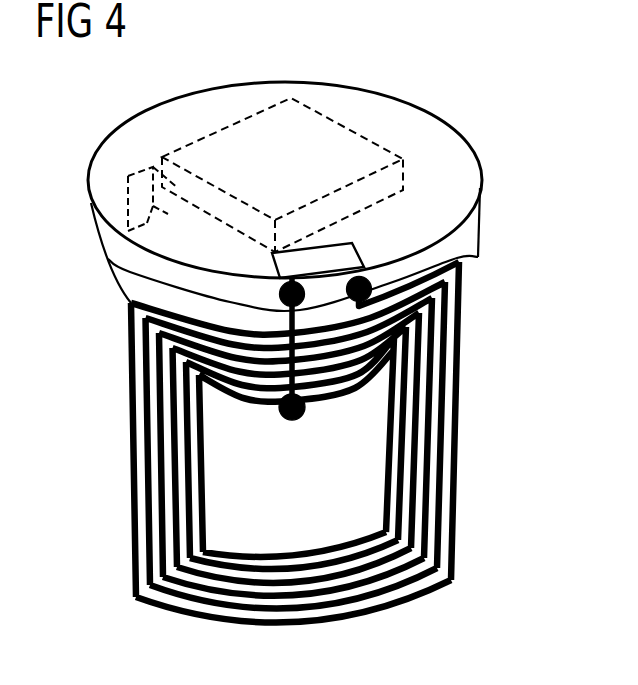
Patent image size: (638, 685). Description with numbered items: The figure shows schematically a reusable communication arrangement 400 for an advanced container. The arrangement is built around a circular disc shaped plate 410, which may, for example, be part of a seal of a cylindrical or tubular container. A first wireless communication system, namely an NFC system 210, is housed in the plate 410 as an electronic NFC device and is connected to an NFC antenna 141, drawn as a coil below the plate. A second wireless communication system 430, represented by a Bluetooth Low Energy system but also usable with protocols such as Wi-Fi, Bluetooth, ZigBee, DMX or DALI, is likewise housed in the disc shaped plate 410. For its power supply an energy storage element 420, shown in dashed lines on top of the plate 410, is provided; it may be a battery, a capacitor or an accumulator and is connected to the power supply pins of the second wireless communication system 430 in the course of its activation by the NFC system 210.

The communication arrangement 400 is at (461, 86).
The circular disc shaped plate 410 is at (459, 236).
The energy storage element 420 is at (308, 115).
The second wireless communication system 430 is at (153, 214).
The NFC system 210 is at (320, 264).
The NFC antenna 141 is at (449, 421).